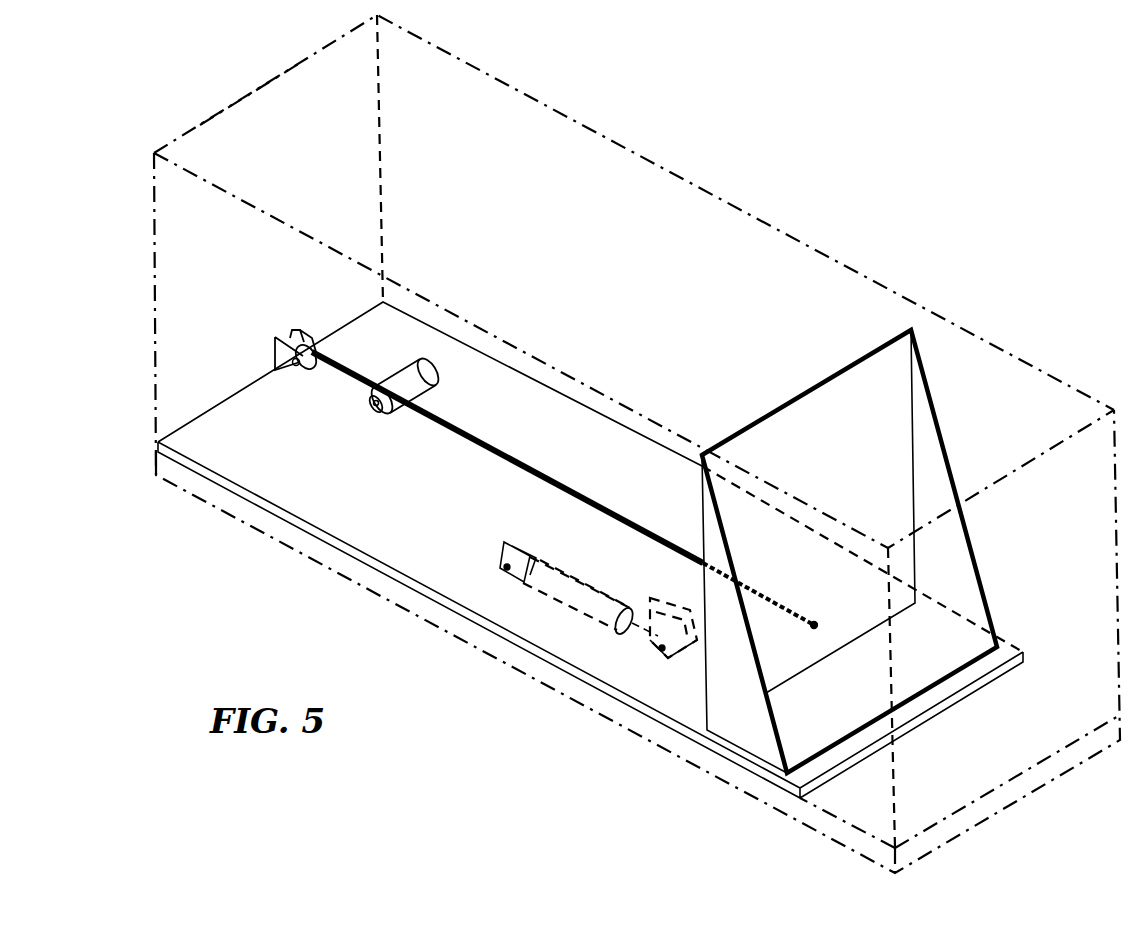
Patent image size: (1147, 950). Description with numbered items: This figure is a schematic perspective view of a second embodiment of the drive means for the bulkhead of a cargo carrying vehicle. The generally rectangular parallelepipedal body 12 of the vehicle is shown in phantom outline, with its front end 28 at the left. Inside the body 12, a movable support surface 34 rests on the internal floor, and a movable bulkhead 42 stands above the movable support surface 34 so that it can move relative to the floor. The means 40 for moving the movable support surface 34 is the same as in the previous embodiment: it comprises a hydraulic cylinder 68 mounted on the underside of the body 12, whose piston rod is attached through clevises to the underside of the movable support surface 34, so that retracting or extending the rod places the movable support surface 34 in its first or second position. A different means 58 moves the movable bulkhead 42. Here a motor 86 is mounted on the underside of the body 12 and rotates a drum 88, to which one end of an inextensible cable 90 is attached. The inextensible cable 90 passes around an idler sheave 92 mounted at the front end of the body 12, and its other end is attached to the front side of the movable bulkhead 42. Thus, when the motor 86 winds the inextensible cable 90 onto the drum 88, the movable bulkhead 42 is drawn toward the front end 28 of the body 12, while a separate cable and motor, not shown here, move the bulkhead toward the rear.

The body 12 is at (776, 228).
The front end 28 is at (228, 103).
The movable support surface 34 is at (236, 402).
The means 40 is at (555, 545).
The movable bulkhead 42 is at (805, 420).
The means 58 is at (630, 520).
The hydraulic cylinder 68 is at (578, 586).
The motor 86 is at (440, 386).
The drum 88 is at (374, 415).
The inextensible cable 90 is at (550, 484).
The idler sheave 92 is at (306, 338).